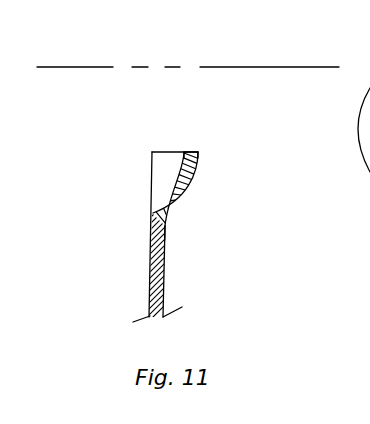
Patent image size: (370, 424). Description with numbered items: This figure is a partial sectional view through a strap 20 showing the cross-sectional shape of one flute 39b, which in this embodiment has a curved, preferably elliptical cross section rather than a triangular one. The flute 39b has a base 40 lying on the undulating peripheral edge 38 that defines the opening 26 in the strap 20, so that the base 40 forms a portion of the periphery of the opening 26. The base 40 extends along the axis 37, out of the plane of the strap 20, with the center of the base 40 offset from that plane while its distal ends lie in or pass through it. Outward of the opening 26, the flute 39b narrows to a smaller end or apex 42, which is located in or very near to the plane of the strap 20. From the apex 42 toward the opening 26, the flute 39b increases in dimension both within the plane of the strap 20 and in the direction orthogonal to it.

The strap 20 is at (167, 273).
The opening 26 is at (183, 92).
The axis 37 is at (285, 67).
The undulating edge 38 is at (193, 152).
The flute 39b is at (194, 188).
The base 40 is at (170, 152).
The apex 42 is at (167, 227).